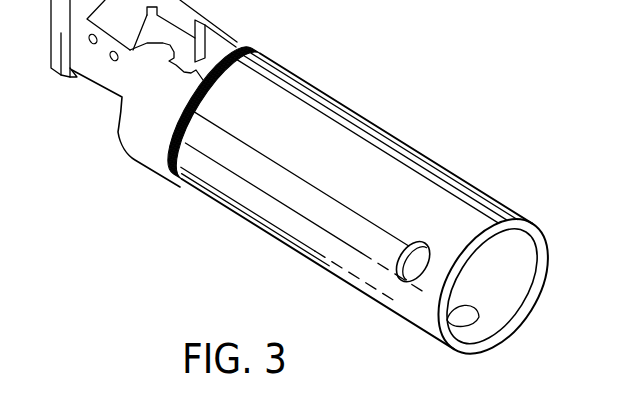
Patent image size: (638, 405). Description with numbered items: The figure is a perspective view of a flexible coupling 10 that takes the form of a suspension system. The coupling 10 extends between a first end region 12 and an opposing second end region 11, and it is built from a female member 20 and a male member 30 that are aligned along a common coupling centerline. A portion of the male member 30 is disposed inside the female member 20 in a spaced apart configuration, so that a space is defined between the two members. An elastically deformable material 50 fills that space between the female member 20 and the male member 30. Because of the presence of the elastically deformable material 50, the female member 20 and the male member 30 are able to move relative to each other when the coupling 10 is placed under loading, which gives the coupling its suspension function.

The flexible coupling 10 is at (414, 71).
The second end region 11 is at (100, 85).
The first end region 12 is at (425, 337).
The female member 20 is at (460, 175).
The male member 30 is at (118, 132).
The elastically deformable material 50 is at (262, 51).